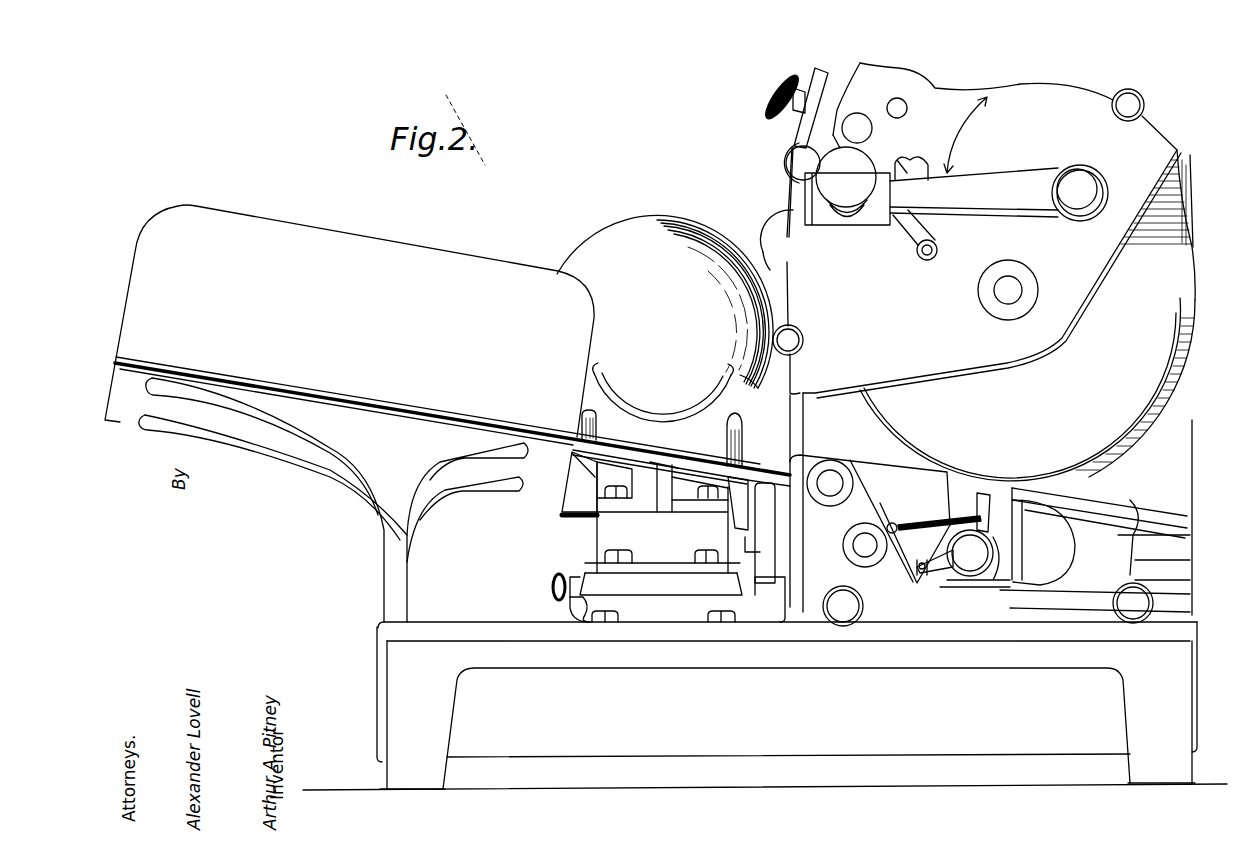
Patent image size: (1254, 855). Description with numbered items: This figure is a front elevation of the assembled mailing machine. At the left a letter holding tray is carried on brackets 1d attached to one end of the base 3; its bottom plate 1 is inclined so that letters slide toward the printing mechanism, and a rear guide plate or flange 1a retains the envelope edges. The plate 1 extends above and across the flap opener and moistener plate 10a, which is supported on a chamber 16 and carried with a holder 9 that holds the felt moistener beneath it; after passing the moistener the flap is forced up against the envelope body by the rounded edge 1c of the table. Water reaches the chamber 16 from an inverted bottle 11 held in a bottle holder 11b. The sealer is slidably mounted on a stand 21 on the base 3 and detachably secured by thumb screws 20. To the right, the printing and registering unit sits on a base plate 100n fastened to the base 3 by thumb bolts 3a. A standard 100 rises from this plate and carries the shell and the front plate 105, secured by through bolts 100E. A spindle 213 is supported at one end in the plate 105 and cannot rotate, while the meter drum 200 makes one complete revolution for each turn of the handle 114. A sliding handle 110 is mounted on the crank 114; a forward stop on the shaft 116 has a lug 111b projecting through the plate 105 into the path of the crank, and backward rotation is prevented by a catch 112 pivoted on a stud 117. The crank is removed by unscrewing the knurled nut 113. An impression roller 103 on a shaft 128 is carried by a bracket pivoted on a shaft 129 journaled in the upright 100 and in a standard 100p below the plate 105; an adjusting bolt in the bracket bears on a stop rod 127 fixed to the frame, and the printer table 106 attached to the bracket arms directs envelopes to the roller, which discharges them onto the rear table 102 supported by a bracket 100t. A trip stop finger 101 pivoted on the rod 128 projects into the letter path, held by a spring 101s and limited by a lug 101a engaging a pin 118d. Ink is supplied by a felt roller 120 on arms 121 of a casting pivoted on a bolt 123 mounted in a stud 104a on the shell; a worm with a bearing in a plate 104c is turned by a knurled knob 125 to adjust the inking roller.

The bottom plate 1 is at (222, 376).
The rear guide plate or flange 1a is at (425, 266).
The rounded edge 1c is at (753, 487).
The brackets 1d is at (383, 470).
The base 3 is at (408, 687).
The thumb bolts 3a is at (840, 607).
The holder 9 is at (612, 505).
The flap opener and moistener plate 10a is at (670, 468).
The inverted bottle 11 is at (676, 232).
The bottle holder 11b is at (657, 428).
The chamber 16 is at (618, 528).
The thumb screws 20 is at (552, 586).
The stand 21 is at (570, 602).
The standard 100 is at (1183, 173).
The through bolts 100E is at (788, 338).
The base plate 100n is at (1038, 612).
The standard 100p is at (818, 537).
The bracket 100t is at (1117, 563).
The trip stop finger 101 is at (982, 518).
The lug 101a is at (937, 557).
The spring 101s is at (923, 525).
The rear table 102 is at (1173, 517).
The impression roller 103 is at (1000, 562).
The stud 104a is at (837, 92).
The plate 104c is at (827, 64).
The front plate 105 is at (952, 360).
The printer table 106 is at (803, 455).
The handle 110 is at (847, 182).
The lug 111b is at (903, 163).
The catch 112 is at (913, 228).
The knurled nut 113 is at (1087, 190).
The handle 114 is at (980, 200).
The shaft 116 is at (900, 107).
The stud 117 is at (935, 250).
The pin 118d is at (923, 568).
The felt roller 120 is at (778, 232).
The arms 121 is at (791, 197).
The bolt 123 is at (800, 163).
The knurled knob 125 is at (770, 90).
The stop rod 127 is at (863, 547).
The shaft 128 is at (972, 563).
The shaft 129 is at (825, 485).
The meter drum 200 is at (1160, 332).
The spindle 213 is at (1013, 290).